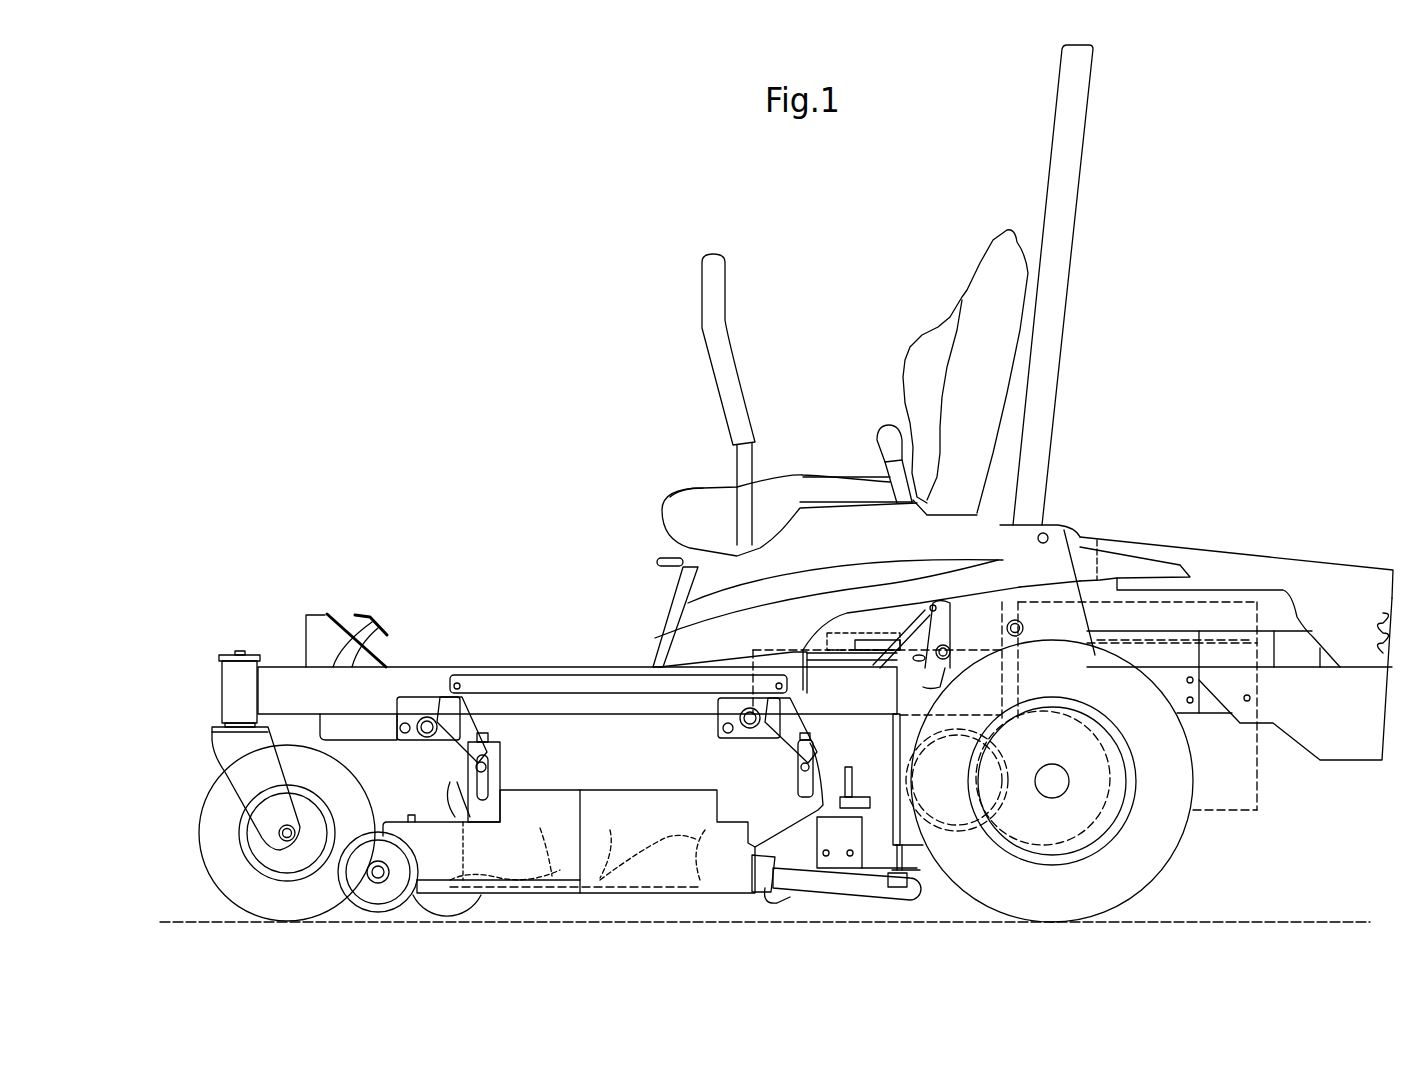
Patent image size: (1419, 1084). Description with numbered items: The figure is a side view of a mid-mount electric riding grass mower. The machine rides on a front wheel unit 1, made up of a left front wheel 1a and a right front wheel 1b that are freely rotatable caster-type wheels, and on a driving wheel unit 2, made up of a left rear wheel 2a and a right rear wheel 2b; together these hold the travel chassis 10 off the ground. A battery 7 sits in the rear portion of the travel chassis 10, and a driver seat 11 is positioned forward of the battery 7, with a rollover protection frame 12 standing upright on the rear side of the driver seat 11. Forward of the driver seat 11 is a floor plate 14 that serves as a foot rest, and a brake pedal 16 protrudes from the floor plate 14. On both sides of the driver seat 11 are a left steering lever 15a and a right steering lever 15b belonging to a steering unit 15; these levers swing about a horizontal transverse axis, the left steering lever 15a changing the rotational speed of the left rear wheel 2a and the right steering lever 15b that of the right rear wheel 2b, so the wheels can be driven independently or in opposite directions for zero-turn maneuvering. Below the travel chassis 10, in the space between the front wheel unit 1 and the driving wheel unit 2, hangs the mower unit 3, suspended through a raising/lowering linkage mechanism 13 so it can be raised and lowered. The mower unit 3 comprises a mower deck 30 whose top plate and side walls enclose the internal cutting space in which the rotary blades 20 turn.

The front wheel unit 1 is at (241, 833).
The left front wheel 1a is at (241, 833).
The right front wheel 1b is at (203, 842).
The driving wheel unit 2 is at (1093, 781).
The left rear wheel 2a is at (1093, 781).
The right rear wheel 2b is at (1173, 833).
The mower unit 3 is at (629, 851).
The battery 7 is at (1255, 797).
The travel chassis 10 is at (286, 656).
The driver seat 11 is at (921, 342).
The rollover protection frame 12 is at (1082, 157).
The raising/lowering linkage mechanism 13 is at (437, 694).
The floor plate 14 is at (536, 667).
The steering unit 15 is at (626, 399).
The left steering lever 15a is at (626, 399).
The right steering lever 15b is at (707, 302).
The brake pedal 16 is at (377, 628).
The rotary blade 20 is at (629, 851).
The mower deck 30 is at (455, 940).